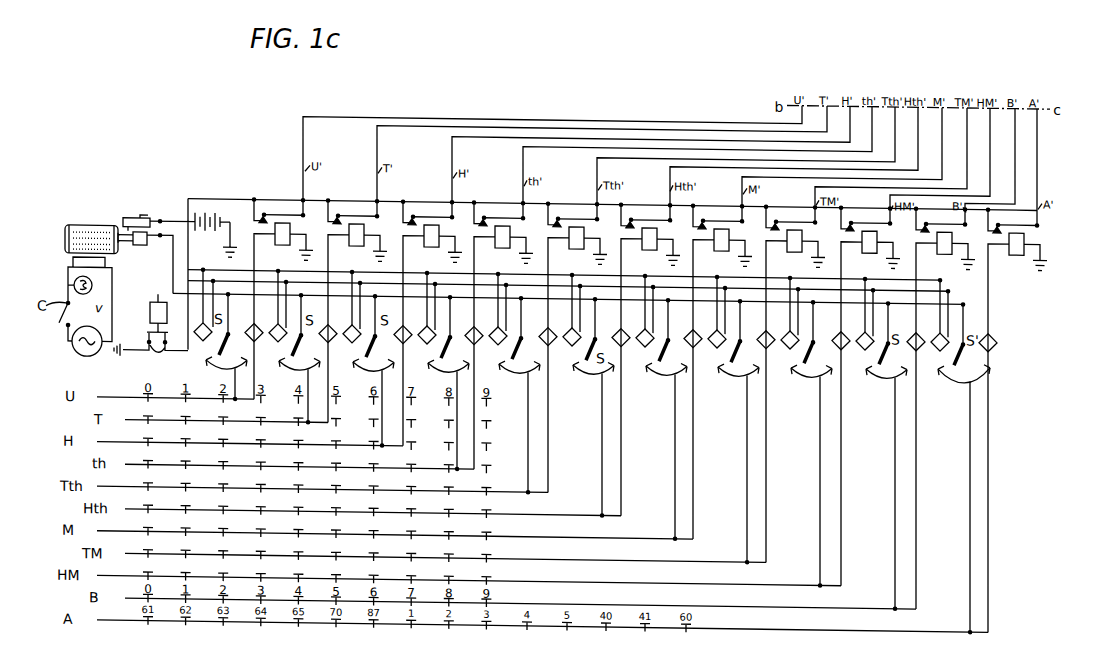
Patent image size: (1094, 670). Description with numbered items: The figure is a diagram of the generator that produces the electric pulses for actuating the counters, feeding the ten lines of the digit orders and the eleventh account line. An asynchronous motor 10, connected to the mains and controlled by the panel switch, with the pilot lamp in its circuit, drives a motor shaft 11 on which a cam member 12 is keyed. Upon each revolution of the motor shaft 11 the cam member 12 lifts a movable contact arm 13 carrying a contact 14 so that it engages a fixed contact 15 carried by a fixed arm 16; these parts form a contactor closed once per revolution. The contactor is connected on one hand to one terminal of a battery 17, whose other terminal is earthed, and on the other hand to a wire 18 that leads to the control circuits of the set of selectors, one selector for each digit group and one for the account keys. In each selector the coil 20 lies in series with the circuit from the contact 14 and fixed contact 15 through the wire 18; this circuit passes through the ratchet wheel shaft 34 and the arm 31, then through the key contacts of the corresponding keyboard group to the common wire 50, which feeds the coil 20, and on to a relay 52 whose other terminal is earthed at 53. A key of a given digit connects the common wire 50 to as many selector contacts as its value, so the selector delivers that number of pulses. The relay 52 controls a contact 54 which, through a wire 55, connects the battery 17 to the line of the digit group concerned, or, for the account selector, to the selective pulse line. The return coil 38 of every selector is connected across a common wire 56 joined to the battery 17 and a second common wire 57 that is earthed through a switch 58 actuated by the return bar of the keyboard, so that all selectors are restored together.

The asynchronous motor 10 is at (84, 224).
The motor shaft 11 is at (126, 241).
The cam member 12 is at (142, 244).
The movable contact arm 13 is at (149, 216).
The contact 14 is at (116, 230).
The fixed contact 15 is at (129, 215).
The fixed arm 16 is at (151, 213).
The battery 17 is at (216, 235).
The wire 18 is at (266, 292).
The coil 20 is at (595, 332).
The arm 31 is at (215, 360).
The ratchet wheel shaft 34 is at (225, 339).
The return coil 38 is at (200, 338).
The common wire 50 is at (254, 371).
The relay 52 is at (283, 242).
The earth 53 is at (308, 251).
The contact 54 is at (262, 207).
The wire 55 is at (308, 207).
The common wire 56 is at (206, 262).
The common wire 57 is at (236, 277).
The switch 58 is at (147, 350).